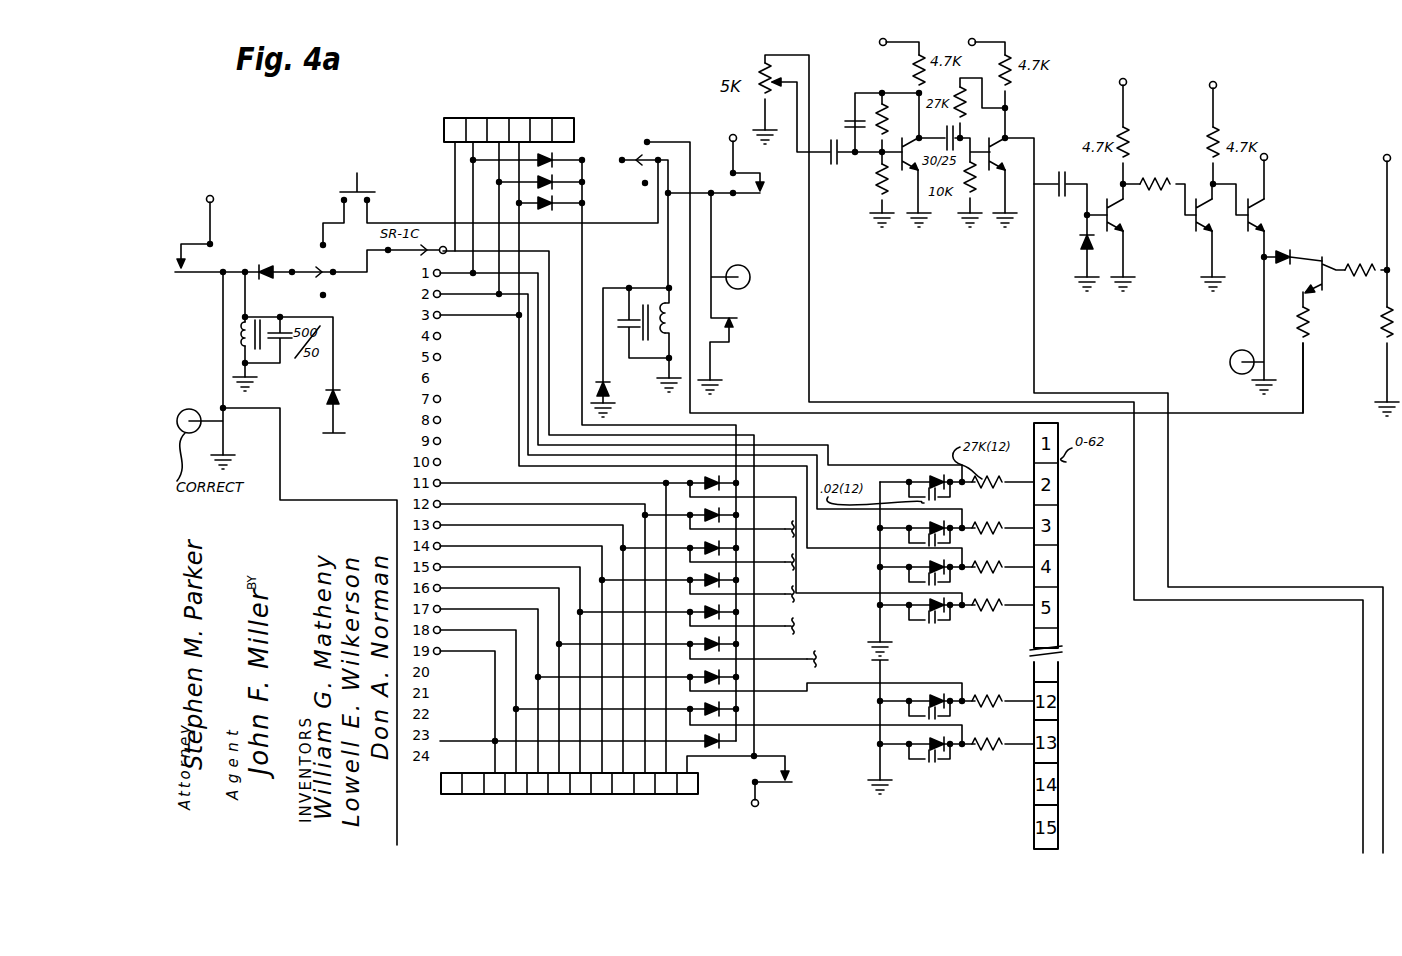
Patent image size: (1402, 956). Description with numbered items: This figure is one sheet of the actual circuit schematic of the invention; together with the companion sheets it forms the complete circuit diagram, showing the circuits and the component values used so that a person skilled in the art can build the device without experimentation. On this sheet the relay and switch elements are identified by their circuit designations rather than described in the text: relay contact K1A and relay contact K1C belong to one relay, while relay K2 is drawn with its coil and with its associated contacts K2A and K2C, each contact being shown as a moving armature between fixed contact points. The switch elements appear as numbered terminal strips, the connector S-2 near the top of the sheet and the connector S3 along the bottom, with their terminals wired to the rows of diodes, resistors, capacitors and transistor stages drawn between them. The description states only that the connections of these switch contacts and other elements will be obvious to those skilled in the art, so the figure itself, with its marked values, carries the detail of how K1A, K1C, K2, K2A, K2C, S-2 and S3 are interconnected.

The relay K1 contact A K1A is at (311, 249).
The relay K1 contact C K1C is at (742, 293).
The relay K2 coil K2 is at (636, 351).
The relay K2 contact A K2A is at (750, 179).
The relay K2 contact C K2C is at (759, 780).
The switch S-2 connector S-2 is at (487, 130).
The switch S3 connector S3 is at (553, 806).